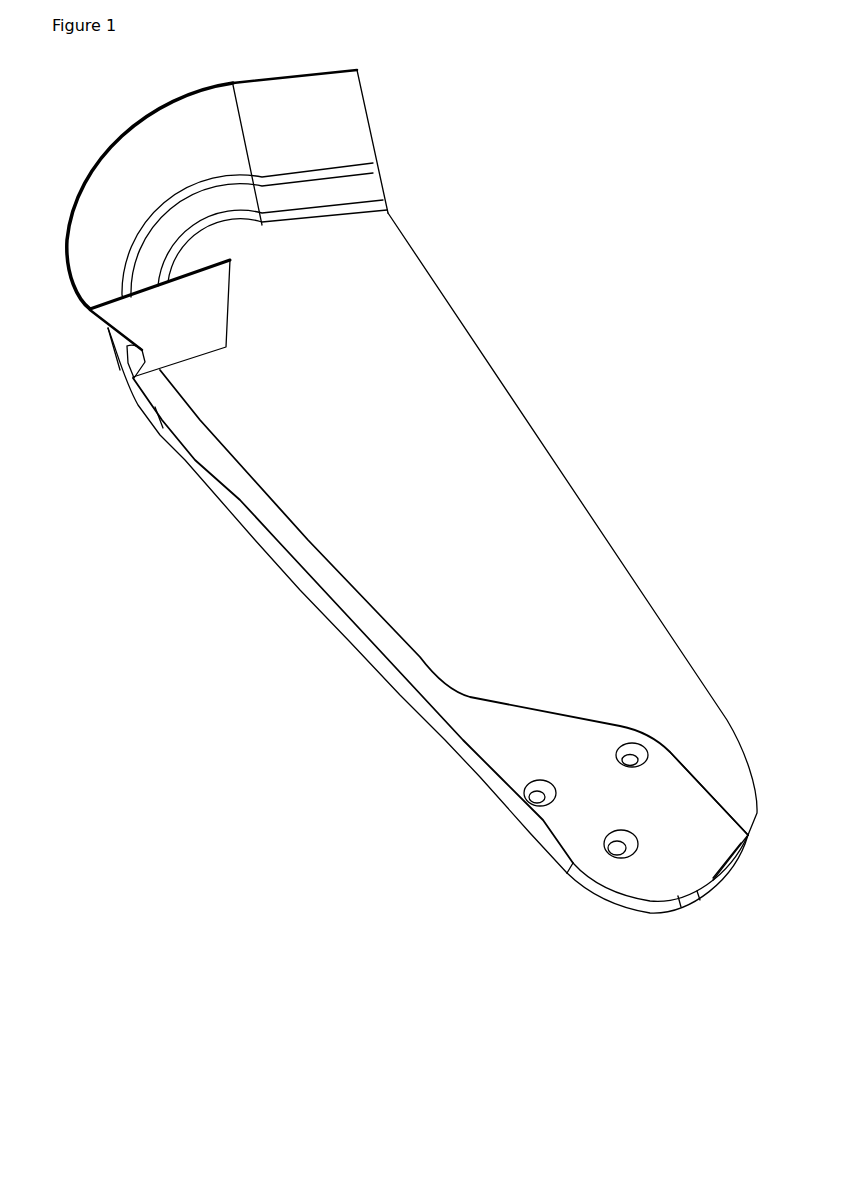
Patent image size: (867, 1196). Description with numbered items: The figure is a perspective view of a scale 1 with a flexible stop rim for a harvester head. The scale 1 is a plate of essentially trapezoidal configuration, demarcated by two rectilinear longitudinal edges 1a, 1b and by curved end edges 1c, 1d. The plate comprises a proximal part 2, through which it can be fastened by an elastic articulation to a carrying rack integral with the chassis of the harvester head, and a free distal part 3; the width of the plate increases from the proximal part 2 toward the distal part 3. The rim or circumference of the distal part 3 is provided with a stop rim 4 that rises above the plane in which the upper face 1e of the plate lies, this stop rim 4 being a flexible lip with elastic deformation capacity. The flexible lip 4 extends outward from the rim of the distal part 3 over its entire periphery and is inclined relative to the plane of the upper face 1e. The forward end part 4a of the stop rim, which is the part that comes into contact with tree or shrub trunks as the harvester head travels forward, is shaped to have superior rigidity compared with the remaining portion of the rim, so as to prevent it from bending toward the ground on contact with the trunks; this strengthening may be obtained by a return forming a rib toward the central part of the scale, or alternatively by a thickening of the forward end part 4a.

The scale 1 is at (480, 497).
The longitudinal edge 1a is at (297, 572).
The longitudinal edge 1b is at (488, 360).
The curved end edge 1c is at (725, 867).
The curved end edge 1d is at (122, 380).
The upper face 1e is at (582, 612).
The proximal part 2 is at (618, 931).
The distal part 3 is at (108, 113).
The stop rim 4 is at (353, 137).
The forward end part 4a is at (108, 328).